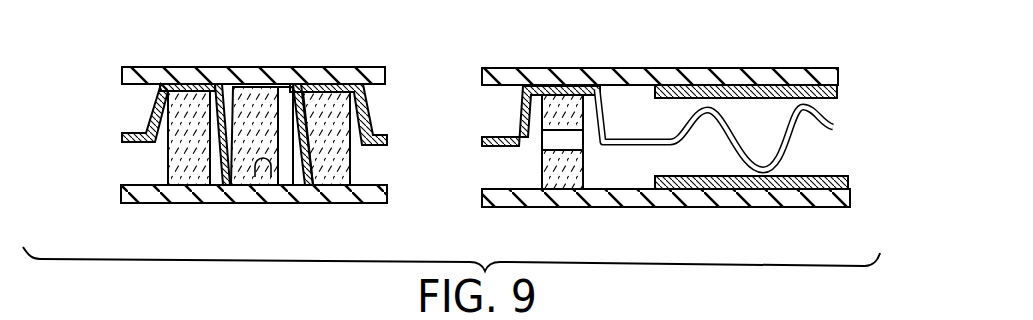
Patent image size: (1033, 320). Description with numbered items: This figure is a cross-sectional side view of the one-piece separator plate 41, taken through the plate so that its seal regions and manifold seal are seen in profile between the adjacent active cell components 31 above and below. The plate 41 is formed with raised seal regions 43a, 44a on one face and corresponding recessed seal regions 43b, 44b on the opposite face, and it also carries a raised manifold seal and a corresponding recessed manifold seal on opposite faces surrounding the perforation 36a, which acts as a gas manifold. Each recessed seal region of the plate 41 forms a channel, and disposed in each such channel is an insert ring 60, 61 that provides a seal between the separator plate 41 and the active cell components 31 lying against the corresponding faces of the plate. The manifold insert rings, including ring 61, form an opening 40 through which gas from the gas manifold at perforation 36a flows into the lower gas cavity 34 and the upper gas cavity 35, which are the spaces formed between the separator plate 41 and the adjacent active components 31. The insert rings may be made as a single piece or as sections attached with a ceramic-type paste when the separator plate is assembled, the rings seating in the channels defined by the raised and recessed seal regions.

The active cell components 31 is at (272, 92).
The lower gas cavity 34 is at (642, 183).
The upper gas cavity 35 is at (642, 125).
The perforation 36a is at (458, 86).
The opening 40 is at (557, 155).
The separator plate 41 is at (838, 102).
The raised seal region 43a is at (195, 84).
The recessed seal region 43b is at (152, 110).
The raised seal region 44a is at (240, 204).
The recessed seal region 44b is at (265, 180).
The insert ring 60 is at (190, 204).
The manifold insert ring 61 is at (272, 86).